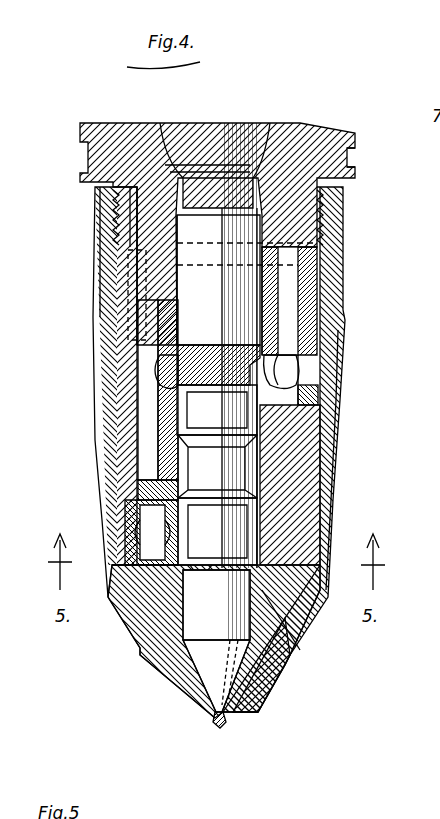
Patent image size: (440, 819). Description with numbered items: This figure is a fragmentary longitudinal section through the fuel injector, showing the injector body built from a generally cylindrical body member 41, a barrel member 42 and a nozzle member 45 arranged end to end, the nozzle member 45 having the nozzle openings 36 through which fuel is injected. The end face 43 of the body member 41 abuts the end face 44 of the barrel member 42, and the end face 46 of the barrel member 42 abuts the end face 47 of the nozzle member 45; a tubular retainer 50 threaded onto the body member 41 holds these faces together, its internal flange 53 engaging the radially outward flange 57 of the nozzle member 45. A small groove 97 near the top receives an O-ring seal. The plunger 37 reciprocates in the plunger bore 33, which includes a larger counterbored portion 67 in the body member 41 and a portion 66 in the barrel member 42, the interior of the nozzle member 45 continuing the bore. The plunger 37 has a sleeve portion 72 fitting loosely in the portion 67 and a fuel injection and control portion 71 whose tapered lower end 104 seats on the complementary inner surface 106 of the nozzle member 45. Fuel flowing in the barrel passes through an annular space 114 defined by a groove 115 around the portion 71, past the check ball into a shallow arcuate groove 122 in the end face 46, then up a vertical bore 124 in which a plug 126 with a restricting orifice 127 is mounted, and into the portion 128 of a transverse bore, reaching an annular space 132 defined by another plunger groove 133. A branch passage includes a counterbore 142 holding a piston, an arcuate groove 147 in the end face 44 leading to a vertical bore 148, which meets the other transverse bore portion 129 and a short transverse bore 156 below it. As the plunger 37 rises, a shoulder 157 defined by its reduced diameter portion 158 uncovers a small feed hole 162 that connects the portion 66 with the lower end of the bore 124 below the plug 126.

The body member 41 is at (112, 121).
The sleeve portion 72 is at (232, 130).
The groove 97 is at (355, 157).
The plunger 37 is at (325, 208).
The end face 44 is at (338, 235).
The end face 43 is at (118, 272).
The counterbore 142 is at (128, 300).
The barrel member 42 is at (300, 507).
The end face 47 is at (316, 532).
The flange 57 is at (300, 615).
The tubular retainer 50 is at (110, 380).
The internal flange 53 is at (128, 622).
The vertical bore 148 is at (300, 294).
The portion of transverse bore 129 is at (328, 362).
The short transverse bore 156 is at (310, 398).
The fuel injection and control portion 71 is at (322, 428).
The annular space 114 is at (258, 460).
The annular groove 115 is at (250, 495).
The portion of plunger bore 67 is at (180, 234).
The plunger bore 33 is at (230, 268).
The arcuate groove 147 is at (180, 332).
The portion of transverse bore 128 is at (162, 385).
The annular space 132 is at (217, 410).
The groove 133 is at (212, 422).
The portion of plunger bore 66 is at (217, 466).
The feed hole 162 is at (217, 531).
The shoulder 157 is at (216, 531).
The vertical bore 124 is at (140, 433).
The orifice 127 is at (140, 493).
The plug 126 is at (130, 510).
The nozzle member 45 is at (176, 666).
The arcuate groove 122 is at (150, 580).
The reduced diameter portion 158 is at (216, 641).
The tapered lower end 104 is at (276, 665).
The inner surface 106 is at (262, 700).
The nozzle openings 36 is at (212, 720).
The end face 46 is at (292, 590).